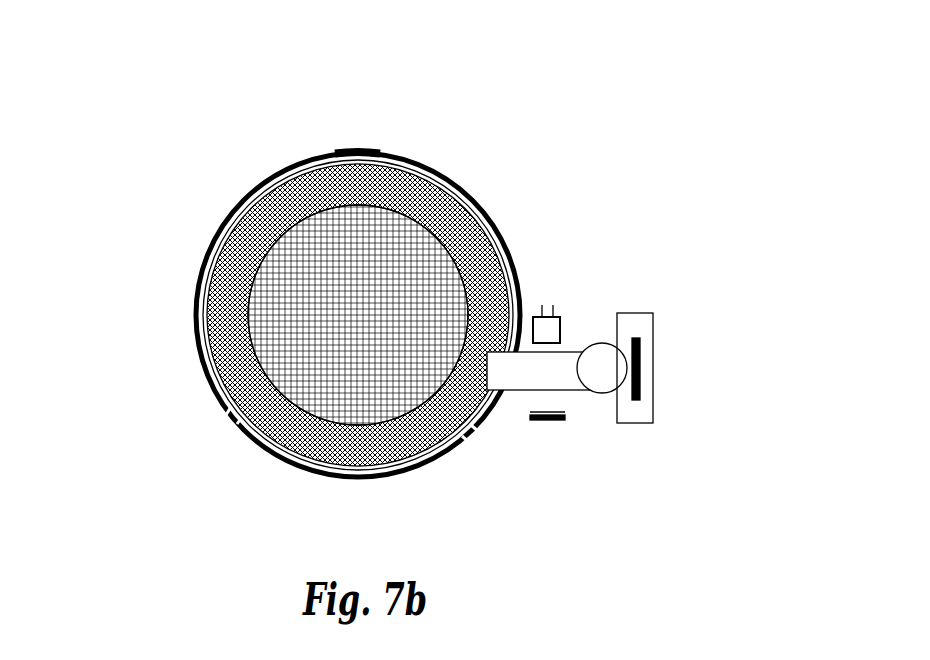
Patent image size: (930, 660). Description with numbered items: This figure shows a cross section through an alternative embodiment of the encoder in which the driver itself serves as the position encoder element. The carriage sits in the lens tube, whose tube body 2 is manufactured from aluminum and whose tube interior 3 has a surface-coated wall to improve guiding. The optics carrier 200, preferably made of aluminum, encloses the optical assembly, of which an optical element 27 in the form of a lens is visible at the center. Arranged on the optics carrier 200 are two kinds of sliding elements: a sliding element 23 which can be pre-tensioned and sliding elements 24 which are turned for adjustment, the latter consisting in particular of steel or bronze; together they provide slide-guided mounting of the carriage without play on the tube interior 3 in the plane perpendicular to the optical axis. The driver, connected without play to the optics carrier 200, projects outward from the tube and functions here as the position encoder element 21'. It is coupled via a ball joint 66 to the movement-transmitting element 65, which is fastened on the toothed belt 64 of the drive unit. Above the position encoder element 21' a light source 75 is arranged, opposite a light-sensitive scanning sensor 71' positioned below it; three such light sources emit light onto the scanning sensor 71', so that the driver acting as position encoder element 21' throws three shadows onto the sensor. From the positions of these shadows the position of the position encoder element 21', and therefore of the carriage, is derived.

The tube body 2 is at (207, 267).
The tube interior 3 is at (210, 328).
The sliding element which can be pre-tensioned 23 is at (345, 152).
The sliding element adjusted by turning 24 is at (237, 420).
The optical element 27 is at (342, 383).
The optics carrier 200 is at (330, 188).
The position encoder element 21' is at (591, 307).
The ball joint 66 is at (598, 383).
The light source 75 is at (553, 328).
The movement-transmitting element 65 is at (637, 327).
The toothed belt 64 is at (637, 373).
The scanning sensor 71' is at (582, 468).